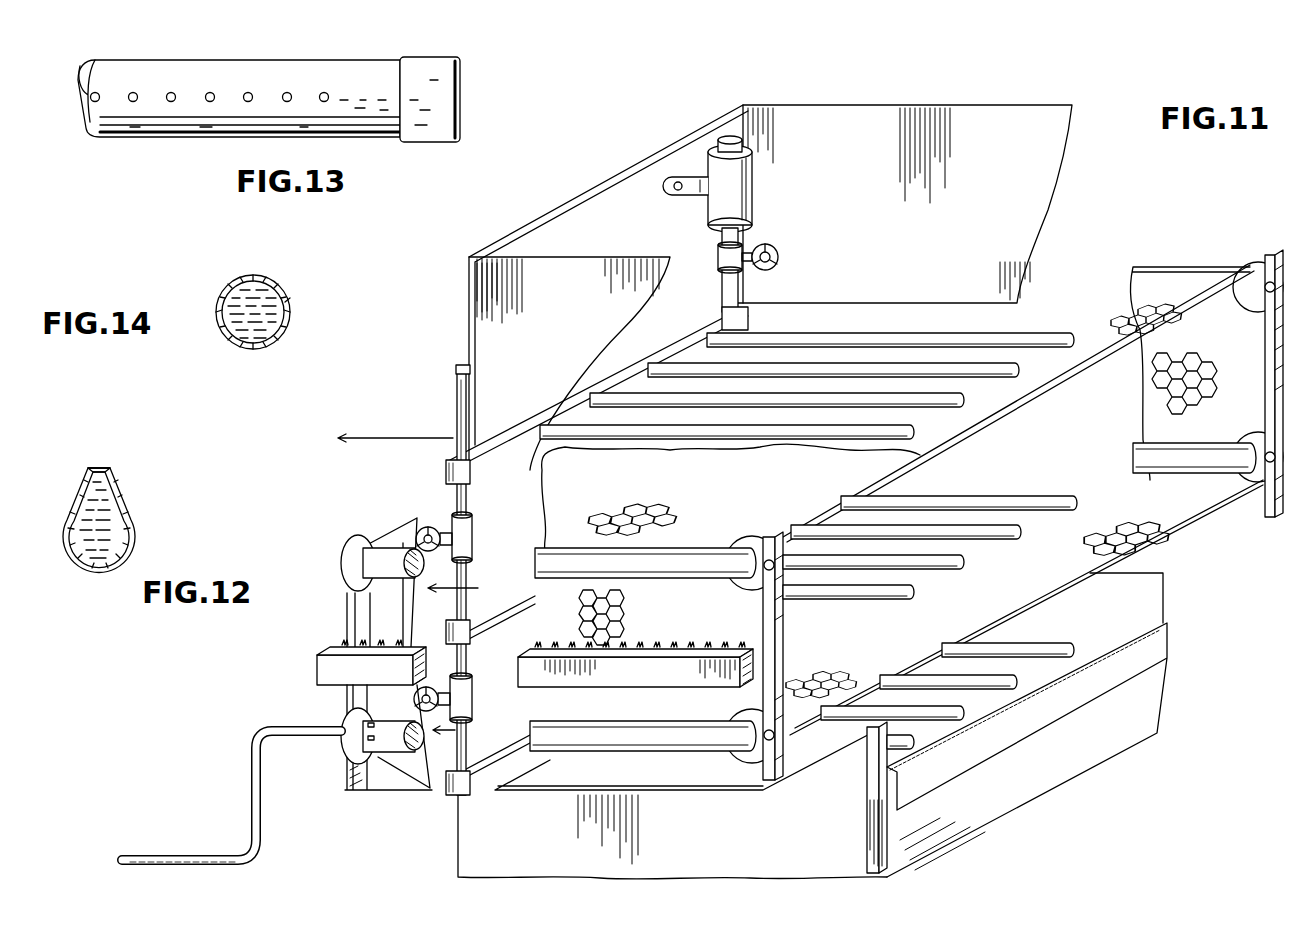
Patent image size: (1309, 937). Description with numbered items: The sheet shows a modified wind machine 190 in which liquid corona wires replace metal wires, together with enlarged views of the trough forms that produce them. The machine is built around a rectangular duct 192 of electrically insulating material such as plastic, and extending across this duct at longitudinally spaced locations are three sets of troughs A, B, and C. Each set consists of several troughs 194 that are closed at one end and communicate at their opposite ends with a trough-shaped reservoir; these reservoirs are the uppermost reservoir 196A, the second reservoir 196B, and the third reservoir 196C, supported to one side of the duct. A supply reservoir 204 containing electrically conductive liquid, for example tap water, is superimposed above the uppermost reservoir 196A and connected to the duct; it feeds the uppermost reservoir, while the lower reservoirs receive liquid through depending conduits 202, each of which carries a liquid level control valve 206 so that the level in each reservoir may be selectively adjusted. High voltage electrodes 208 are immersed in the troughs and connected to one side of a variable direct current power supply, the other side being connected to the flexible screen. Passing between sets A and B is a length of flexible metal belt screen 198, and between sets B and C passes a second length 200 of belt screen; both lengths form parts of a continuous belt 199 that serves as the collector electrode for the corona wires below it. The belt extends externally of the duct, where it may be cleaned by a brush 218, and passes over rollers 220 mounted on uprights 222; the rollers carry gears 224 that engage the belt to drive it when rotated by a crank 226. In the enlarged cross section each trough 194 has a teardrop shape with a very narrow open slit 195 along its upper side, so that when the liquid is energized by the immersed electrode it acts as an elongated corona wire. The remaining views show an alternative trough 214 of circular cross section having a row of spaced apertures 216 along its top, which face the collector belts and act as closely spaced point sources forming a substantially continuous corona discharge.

In FIG. 11, the wind machine 190 is at (1193, 713).
In FIG. 11, the rectangular duct 192 is at (992, 805).
In FIG. 12, the troughs 194 is at (64, 524).
In FIG. 11, the troughs 194 is at (846, 441).
In FIG. 12, the open slit 195 is at (106, 466).
In FIG. 11, the uppermost reservoir 196A is at (650, 355).
In FIG. 11, the second reservoir 196B is at (528, 575).
In FIG. 11, the third reservoir 196C is at (528, 735).
In FIG. 11, the flexible metal belt screen 198 is at (944, 451).
In FIG. 11, the continuous belt 199 is at (682, 497).
In FIG. 11, the second length of flexible metal belt screen 200 is at (815, 756).
In FIG. 11, the conduits 202 is at (455, 500).
In FIG. 11, the supply reservoir 204 is at (752, 190).
In FIG. 11, the liquid level control valves 206 is at (718, 262).
In FIG. 11, the high voltage electrodes 208 is at (416, 437).
In FIG. 13, the trough 214 is at (184, 59).
In FIG. 14, the trough 214 is at (216, 313).
In FIG. 13, the apertures 216 is at (286, 92).
In FIG. 14, the apertures 216 is at (286, 306).
In FIG. 11, the brush 218 is at (372, 648).
In FIG. 11, the rollers 220 is at (664, 746).
In FIG. 11, the uprights 222 is at (776, 620).
In FIG. 11, the gears 224 is at (346, 762).
In FIG. 11, the crank 226 is at (261, 817).
In FIG. 11, the first set of troughs A is at (1034, 332).
In FIG. 11, the second set of troughs B is at (1055, 496).
In FIG. 11, the third set of troughs C is at (1064, 645).